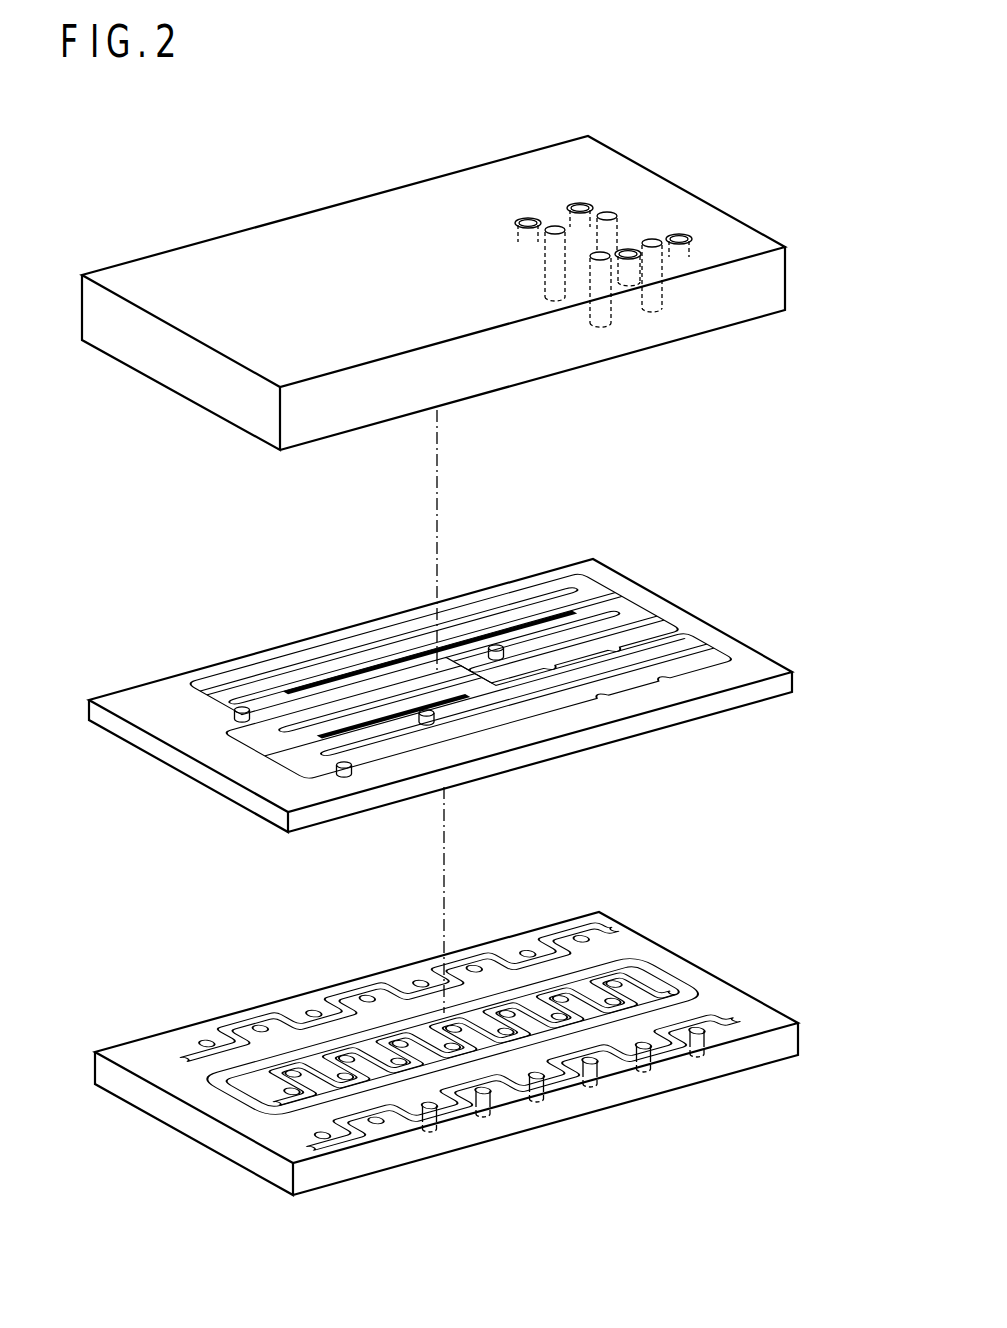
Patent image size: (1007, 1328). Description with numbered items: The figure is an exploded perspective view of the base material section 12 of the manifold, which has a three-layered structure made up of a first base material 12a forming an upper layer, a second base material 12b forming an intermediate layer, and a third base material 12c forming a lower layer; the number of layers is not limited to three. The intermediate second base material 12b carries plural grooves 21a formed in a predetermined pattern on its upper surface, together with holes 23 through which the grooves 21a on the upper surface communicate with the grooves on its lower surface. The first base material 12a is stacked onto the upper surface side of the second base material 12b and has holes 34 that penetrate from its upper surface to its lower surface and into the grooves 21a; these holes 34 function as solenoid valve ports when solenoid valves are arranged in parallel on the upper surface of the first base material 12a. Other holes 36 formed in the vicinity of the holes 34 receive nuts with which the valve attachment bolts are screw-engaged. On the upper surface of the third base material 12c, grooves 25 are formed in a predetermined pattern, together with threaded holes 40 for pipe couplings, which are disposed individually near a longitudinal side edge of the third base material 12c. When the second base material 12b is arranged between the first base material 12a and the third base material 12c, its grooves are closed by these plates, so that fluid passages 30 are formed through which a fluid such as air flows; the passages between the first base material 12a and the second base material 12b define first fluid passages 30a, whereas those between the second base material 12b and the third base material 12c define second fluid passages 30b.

The base material section 12 is at (366, 102).
The first base material 12a is at (88, 313).
The second base material 12b is at (95, 711).
The third base material 12c is at (100, 1078).
The grooves 21a is at (478, 610).
The holes 23 is at (228, 716).
The grooves 25 is at (657, 968).
The fluid passages 30 is at (501, 653).
The first fluid passages 30a is at (607, 597).
The second fluid passages 30b is at (752, 732).
The holes 34 is at (608, 210).
The other holes 36 is at (527, 216).
The threaded holes 40 is at (697, 1056).